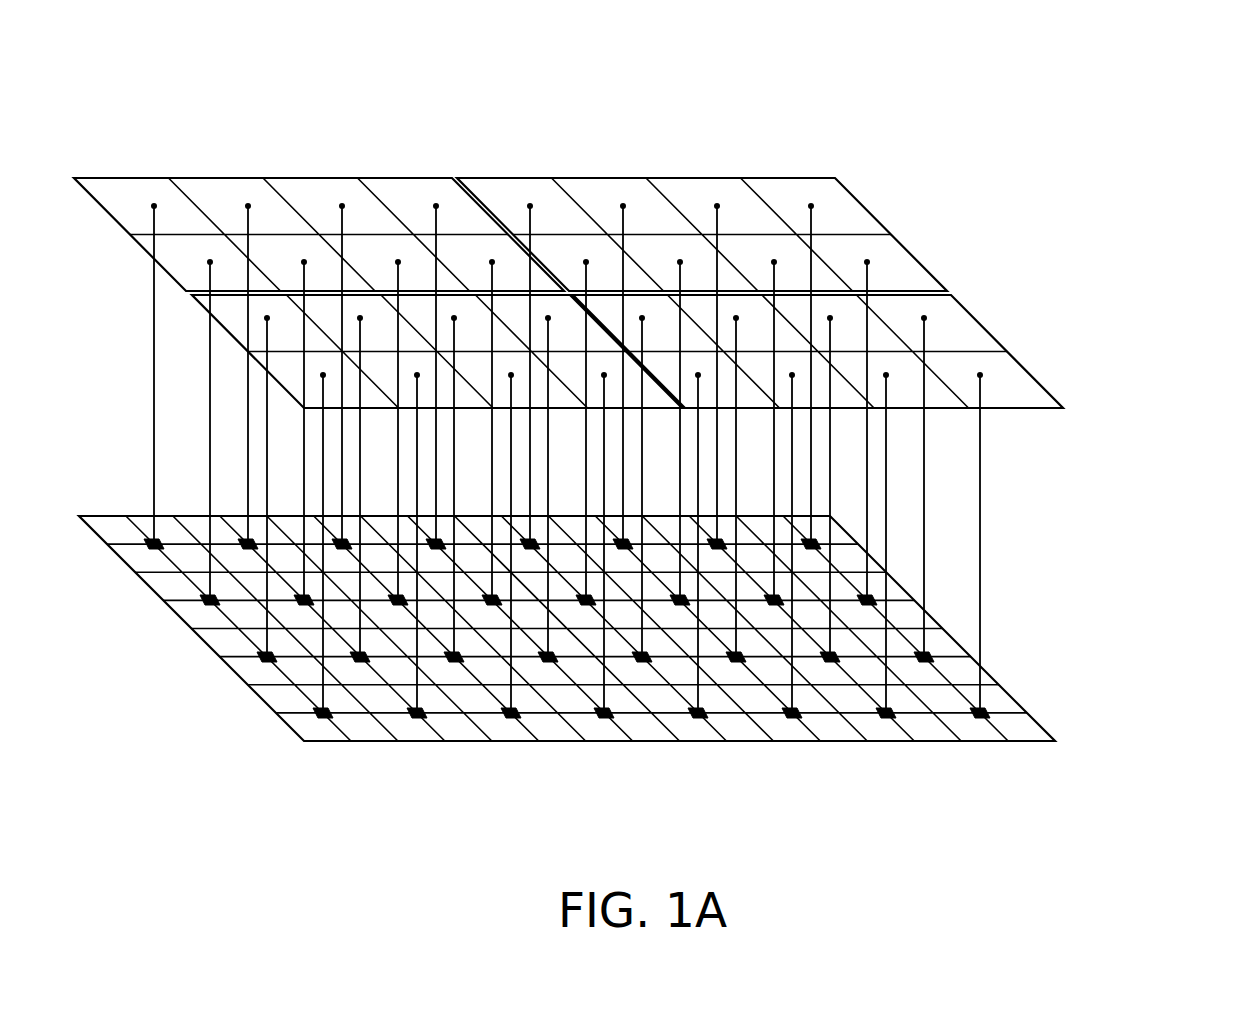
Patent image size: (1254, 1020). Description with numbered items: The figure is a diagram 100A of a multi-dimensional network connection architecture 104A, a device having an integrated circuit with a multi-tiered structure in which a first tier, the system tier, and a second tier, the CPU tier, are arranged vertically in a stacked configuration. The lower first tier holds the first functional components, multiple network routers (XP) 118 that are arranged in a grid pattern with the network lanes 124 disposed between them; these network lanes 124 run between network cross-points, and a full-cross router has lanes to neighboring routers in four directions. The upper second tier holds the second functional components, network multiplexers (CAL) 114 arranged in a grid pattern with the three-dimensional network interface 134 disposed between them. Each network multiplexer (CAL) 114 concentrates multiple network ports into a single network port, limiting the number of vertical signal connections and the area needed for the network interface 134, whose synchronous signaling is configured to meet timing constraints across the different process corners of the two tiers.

The diagram 100A is at (141, 38).
The multi-dimensional network connection architecture 104A is at (850, 48).
The network multiplexer (CAL) 114 is at (1013, 386).
The 3D network interface 134 is at (985, 533).
The network router (XP) 118 is at (983, 706).
The network lanes 124 is at (920, 713).